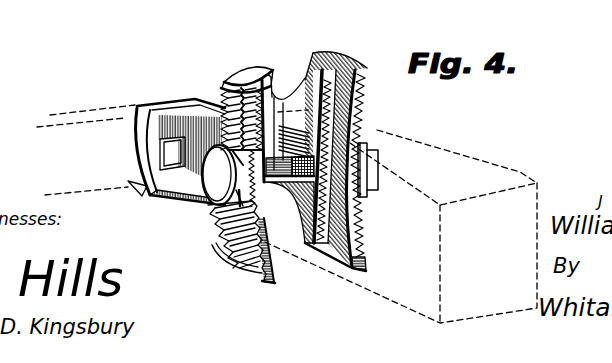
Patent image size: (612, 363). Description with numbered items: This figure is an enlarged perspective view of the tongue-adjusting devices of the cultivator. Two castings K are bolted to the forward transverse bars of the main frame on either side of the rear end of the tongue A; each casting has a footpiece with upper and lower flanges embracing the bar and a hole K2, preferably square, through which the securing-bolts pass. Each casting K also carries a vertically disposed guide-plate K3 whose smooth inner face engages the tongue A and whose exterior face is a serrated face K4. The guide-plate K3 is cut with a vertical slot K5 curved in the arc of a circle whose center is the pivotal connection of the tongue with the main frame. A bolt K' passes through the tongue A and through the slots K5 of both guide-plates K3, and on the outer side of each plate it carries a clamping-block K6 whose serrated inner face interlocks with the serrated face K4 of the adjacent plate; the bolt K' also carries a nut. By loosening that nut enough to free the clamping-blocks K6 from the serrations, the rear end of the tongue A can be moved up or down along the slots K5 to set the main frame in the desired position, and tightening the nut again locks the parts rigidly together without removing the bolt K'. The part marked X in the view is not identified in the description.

The casting K is at (249, 144).
The bolt K' is at (232, 155).
The hole K2 is at (174, 162).
The guide-plate K3 is at (265, 280).
The serrated face K4 is at (230, 234).
The slot K5 is at (240, 254).
The clamping-block K6 is at (368, 152).
The rod X is at (331, 143).
The tongue A is at (522, 173).